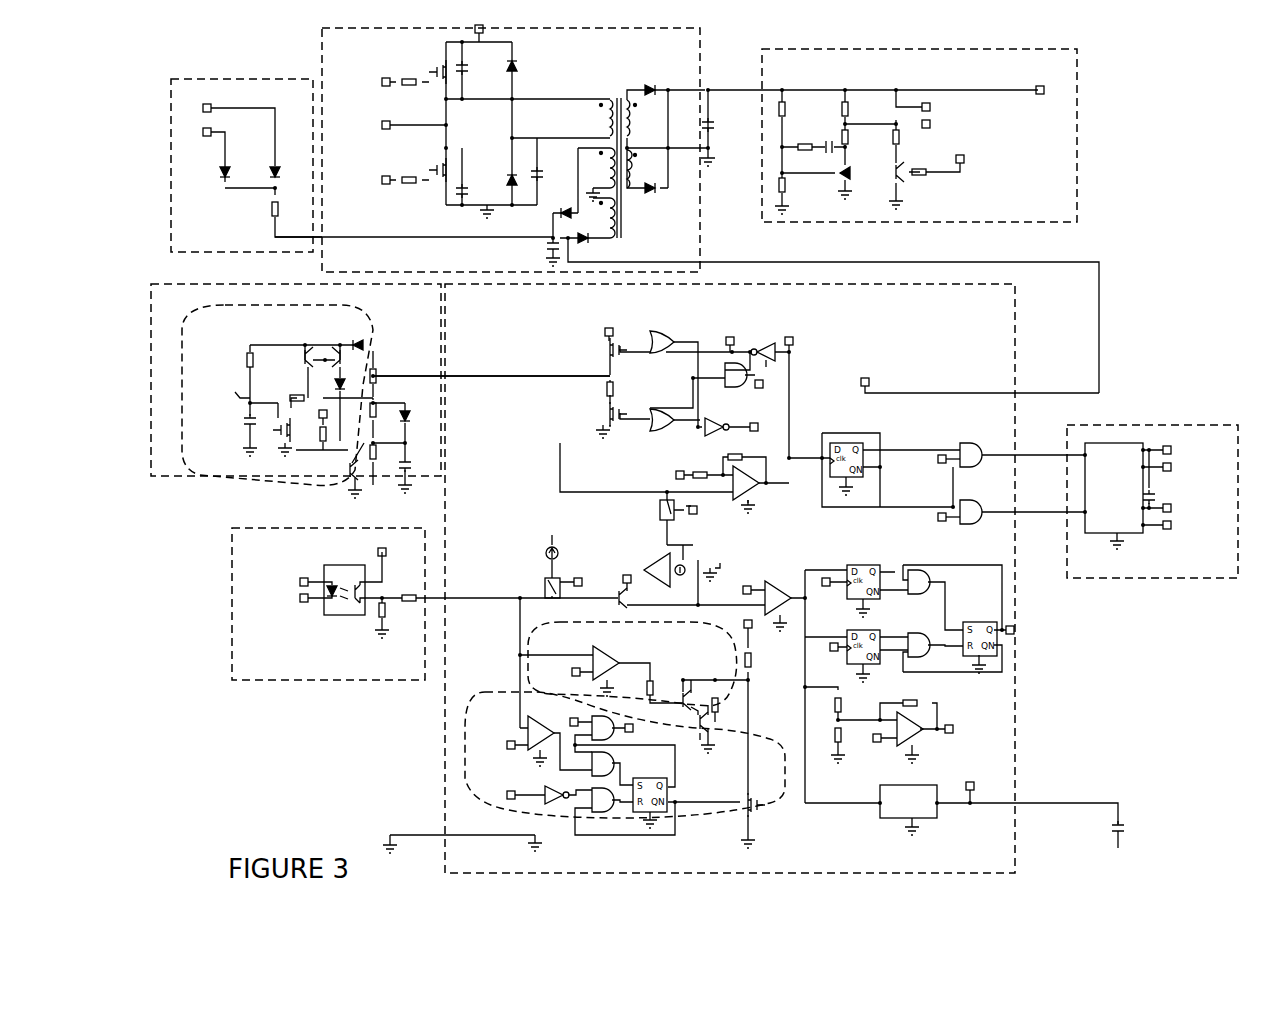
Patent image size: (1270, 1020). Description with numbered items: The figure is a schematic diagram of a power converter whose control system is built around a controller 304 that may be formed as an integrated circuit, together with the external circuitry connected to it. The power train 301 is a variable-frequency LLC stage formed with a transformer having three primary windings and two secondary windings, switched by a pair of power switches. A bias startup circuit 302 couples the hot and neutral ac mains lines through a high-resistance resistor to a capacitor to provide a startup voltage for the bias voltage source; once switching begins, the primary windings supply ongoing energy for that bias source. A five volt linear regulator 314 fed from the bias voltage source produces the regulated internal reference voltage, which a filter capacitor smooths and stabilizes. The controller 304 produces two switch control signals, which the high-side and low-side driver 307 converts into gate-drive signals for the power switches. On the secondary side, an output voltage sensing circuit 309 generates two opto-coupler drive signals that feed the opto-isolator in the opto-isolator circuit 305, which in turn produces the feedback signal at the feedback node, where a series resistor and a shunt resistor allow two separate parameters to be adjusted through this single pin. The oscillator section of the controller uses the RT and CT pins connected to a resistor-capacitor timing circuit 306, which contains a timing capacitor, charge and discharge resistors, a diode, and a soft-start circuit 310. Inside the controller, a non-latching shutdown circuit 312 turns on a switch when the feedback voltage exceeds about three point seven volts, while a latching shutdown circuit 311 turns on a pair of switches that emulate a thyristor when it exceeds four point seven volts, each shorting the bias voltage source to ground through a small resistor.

The variable-frequency LLC power train 301 is at (687, 203).
The bias startup circuit 302 is at (246, 165).
The controller 304 is at (760, 578).
The opto-isolator circuit 305 is at (376, 604).
The resistor-capacitor timing circuit 306 is at (380, 391).
The high-side and low-side driver 307 is at (1152, 501).
The output voltage sensing circuit 309 is at (919, 135).
The soft-start circuit 310 is at (396, 401).
The latching shutdown circuit 311 is at (639, 687).
The non-latching shutdown circuit 312 is at (625, 770).
The five volt linear regulator 314 is at (880, 820).